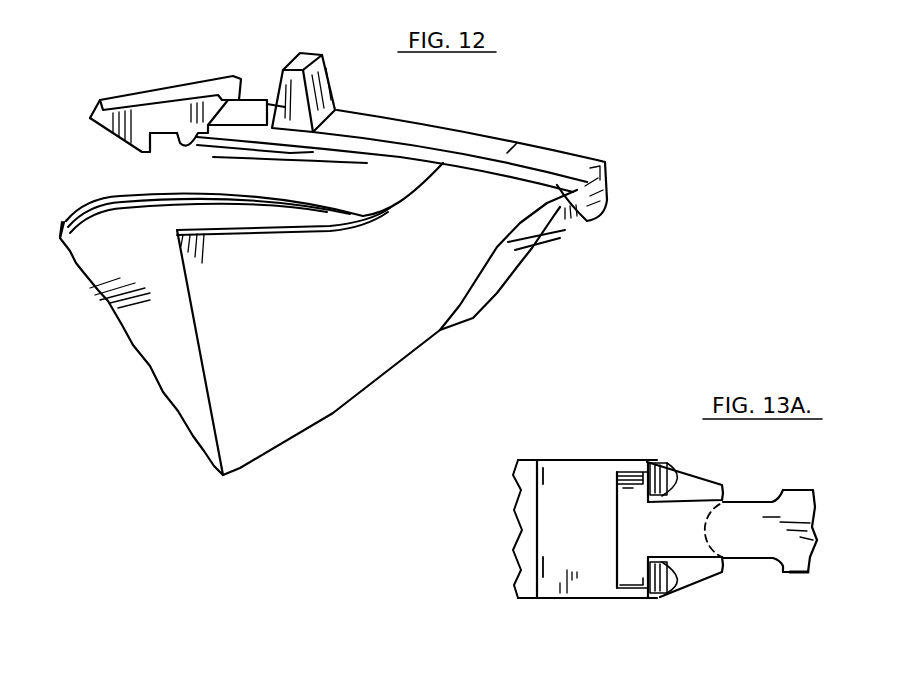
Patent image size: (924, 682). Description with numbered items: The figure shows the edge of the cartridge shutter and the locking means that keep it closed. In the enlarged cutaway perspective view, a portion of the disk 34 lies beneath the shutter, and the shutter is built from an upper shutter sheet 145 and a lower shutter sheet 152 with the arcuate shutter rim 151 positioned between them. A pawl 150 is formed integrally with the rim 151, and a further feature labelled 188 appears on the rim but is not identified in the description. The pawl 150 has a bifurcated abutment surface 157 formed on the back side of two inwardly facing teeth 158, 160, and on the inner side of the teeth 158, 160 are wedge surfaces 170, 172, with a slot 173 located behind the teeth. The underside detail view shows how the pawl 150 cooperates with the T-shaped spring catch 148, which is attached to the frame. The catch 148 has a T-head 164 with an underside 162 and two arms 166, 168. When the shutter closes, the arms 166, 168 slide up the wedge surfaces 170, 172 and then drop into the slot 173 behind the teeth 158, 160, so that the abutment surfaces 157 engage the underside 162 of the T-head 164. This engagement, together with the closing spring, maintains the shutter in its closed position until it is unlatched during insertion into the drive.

In FIG. 12, the disk 34 is at (163, 349).
In FIG. 12, the upper shutter sheet 145 is at (383, 362).
In FIG. 12, the pawl 150 is at (167, 110).
In FIG. 12, the arcuate shutter rim 151 is at (477, 143).
In FIG. 12, the lower shutter sheet 152 is at (575, 220).
In FIG. 12, the bifurcated abutment surface 157 is at (180, 140).
In FIG. 13A, the bifurcated abutment surface 157 is at (643, 463).
In FIG. 13A, the inwardly facing tooth 158 is at (698, 473).
In FIG. 12, the inwardly facing tooth 160 is at (142, 152).
In FIG. 13A, the inwardly facing tooth 160 is at (700, 573).
In FIG. 13A, the underside of the T-head 162 is at (682, 480).
In FIG. 13A, the T-head 164 is at (623, 520).
In FIG. 13A, the arm of the spring catch 166 is at (630, 463).
In FIG. 13A, the arm of the spring catch 168 is at (617, 580).
In FIG. 13A, the wedge surface 170 is at (724, 493).
In FIG. 12, the wedge surface 172 is at (100, 135).
In FIG. 13A, the wedge surface 172 is at (728, 568).
In FIG. 12, the slot 173 is at (243, 107).
In FIG. 13A, the slot 173 is at (562, 480).
In FIG. 12, the boss 188 is at (287, 67).
In FIG. 13A, the T-shaped spring catch 148 is at (790, 574).